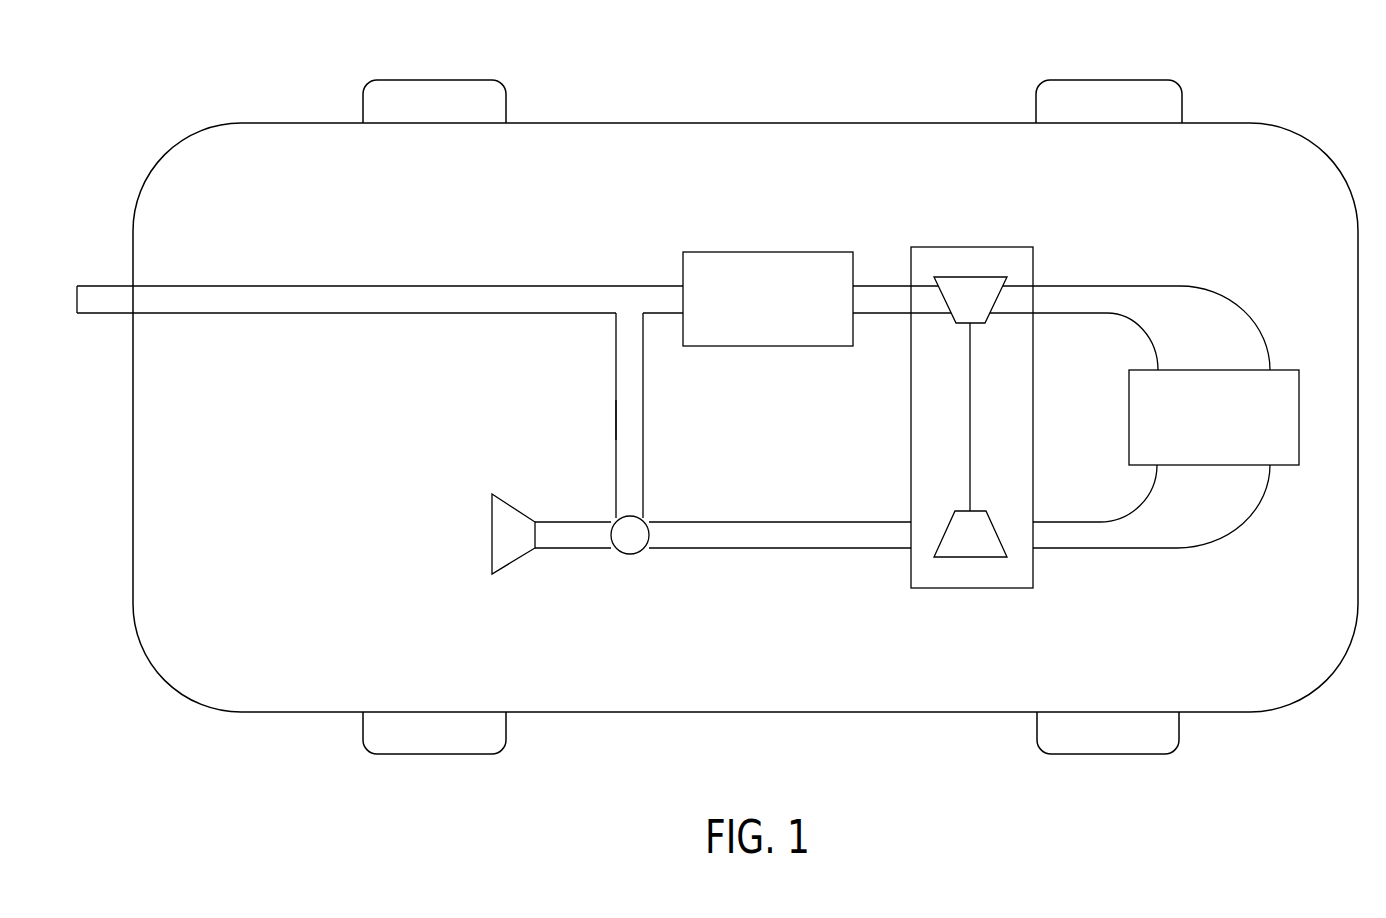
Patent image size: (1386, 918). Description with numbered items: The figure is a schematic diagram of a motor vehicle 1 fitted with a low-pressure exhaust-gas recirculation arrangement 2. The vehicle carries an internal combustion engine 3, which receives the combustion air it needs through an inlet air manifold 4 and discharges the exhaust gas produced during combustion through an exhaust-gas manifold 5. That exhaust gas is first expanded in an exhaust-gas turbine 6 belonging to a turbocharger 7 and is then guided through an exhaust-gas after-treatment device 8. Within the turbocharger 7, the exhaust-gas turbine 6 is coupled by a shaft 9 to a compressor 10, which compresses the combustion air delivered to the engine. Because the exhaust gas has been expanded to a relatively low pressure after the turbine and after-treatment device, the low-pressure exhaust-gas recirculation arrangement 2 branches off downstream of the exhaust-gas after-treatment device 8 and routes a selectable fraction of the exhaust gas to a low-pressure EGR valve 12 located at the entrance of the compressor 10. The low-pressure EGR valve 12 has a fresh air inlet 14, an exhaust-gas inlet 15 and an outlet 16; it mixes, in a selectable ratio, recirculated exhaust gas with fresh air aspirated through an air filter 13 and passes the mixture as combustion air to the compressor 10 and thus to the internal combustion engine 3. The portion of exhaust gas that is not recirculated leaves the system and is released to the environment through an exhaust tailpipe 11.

The motor vehicle 1 is at (1294, 88).
The low-pressure exhaust-gas recirculation arrangement 2 is at (643, 398).
The internal combustion engine 3 is at (1280, 370).
The inlet air manifold 4 is at (1246, 516).
The exhaust-gas manifold 5 is at (1246, 316).
The exhaust-gas turbine 6 is at (968, 258).
The turbocharger 7 is at (1035, 268).
The exhaust-gas after-treatment device 8 is at (766, 252).
The shaft 9 is at (970, 426).
The compressor 10 is at (971, 574).
The exhaust tailpipe 11 is at (113, 286).
The low-pressure EGR valve 12 is at (628, 517).
The air filter 13 is at (490, 537).
The fresh air inlet 14 is at (573, 534).
The exhaust-gas inlet 15 is at (632, 439).
The outlet 16 is at (683, 534).